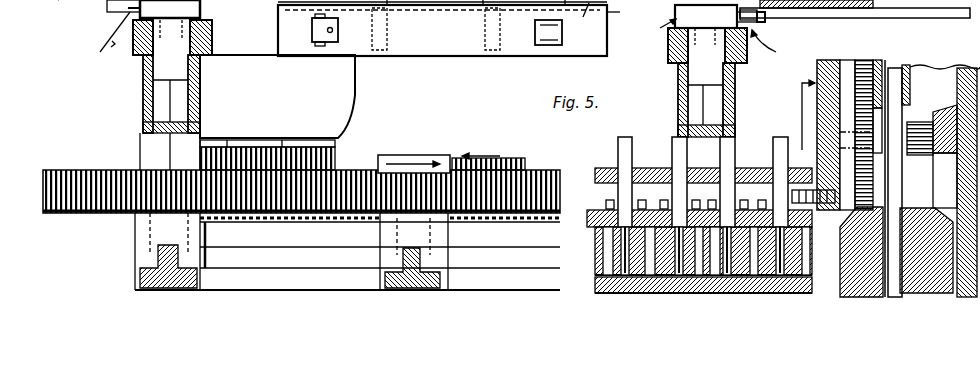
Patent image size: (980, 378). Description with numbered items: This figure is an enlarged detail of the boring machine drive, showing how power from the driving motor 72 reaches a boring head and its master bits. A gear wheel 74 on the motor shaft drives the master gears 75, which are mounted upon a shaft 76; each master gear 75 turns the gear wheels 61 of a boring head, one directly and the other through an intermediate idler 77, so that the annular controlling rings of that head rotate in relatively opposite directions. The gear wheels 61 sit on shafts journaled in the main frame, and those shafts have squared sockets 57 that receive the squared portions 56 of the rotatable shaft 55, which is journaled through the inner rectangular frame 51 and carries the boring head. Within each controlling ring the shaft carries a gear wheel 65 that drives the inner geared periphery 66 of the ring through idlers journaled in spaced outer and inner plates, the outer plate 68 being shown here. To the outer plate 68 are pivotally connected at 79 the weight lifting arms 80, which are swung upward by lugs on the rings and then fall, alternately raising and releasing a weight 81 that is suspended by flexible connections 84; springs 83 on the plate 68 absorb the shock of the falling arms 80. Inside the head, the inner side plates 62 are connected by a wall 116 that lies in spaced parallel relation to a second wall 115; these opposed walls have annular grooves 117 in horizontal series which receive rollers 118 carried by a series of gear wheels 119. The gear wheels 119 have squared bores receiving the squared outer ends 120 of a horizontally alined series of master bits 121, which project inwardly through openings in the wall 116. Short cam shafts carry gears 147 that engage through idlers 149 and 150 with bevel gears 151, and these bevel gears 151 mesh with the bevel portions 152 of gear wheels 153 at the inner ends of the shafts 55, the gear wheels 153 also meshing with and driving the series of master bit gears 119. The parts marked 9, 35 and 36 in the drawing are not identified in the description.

The outer plate 68 is at (58, 0).
The spring 83 is at (436, 26).
The link 9 is at (111, 39).
The bearing housing 36 is at (165, 107).
The rotatable shaft 55 is at (167, 60).
The squared socket 57 is at (143, 88).
The driving motor 72 is at (356, 94).
The weight 81 is at (514, 58).
The flexible connection 84 is at (437, 30).
The inner geared periphery 66 is at (585, 18).
The weight lifting arm 80 is at (621, 25).
The gear wheel 65 is at (659, 27).
The squared portion 56 is at (697, 98).
The shaft 35 is at (693, 66).
The pivotal connection 79 is at (769, 48).
The shaft 76 is at (855, 10).
The gear wheel 61 is at (160, 163).
The gear wheel 74 is at (335, 149).
The master gear 75 is at (543, 180).
The intermediate idler 77 is at (503, 180).
The inner rectangular frame 51 is at (330, 251).
The wall 115 is at (598, 283).
The squared outer end 120 is at (560, 255).
The master bit gear 119 is at (598, 238).
The roller 118 is at (614, 196).
The master bit 121 is at (618, 141).
The annular groove 117 is at (641, 218).
The wall 116 is at (700, 213).
The inner side plate 62 is at (838, 56).
The gear 147 is at (861, 80).
The bevel gear 151 is at (934, 173).
The idler 150 is at (939, 181).
The idler 149 is at (940, 128).
The bevel portion 152 is at (886, 237).
The gear wheel 153 is at (926, 250).